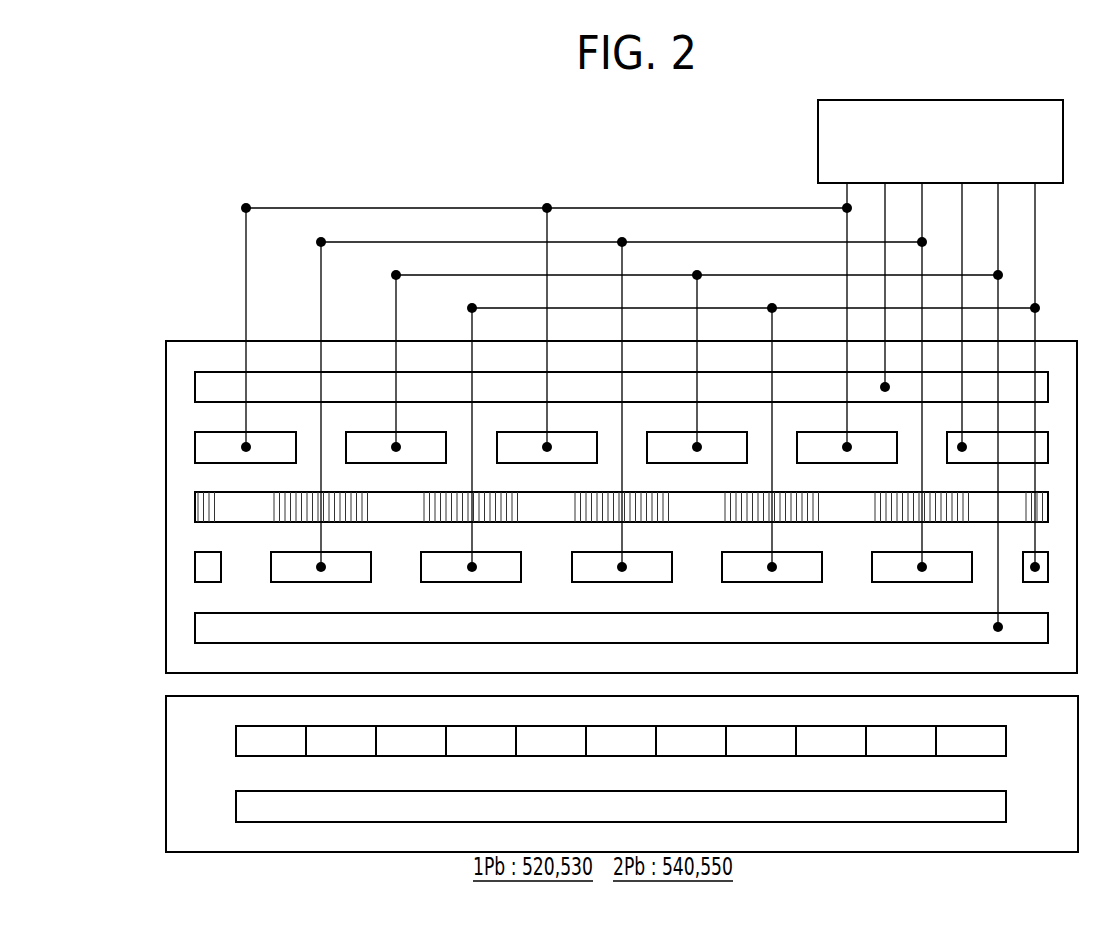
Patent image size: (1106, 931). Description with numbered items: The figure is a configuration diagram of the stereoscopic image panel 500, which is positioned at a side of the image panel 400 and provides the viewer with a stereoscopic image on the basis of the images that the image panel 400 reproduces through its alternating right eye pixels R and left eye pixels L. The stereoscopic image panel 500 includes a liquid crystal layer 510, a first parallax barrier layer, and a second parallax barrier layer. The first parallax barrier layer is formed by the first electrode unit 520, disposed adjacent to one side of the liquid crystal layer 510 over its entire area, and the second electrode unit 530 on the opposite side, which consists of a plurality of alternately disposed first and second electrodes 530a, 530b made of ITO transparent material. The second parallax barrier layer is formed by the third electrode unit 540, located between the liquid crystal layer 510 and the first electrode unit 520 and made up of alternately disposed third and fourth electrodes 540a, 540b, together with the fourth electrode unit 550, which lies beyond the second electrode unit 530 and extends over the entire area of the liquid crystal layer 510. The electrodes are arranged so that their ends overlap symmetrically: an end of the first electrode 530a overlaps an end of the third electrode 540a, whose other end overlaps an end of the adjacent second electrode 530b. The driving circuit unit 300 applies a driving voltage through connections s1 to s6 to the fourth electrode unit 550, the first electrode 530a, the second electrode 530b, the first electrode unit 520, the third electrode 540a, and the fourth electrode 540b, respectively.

The driving circuit unit 300 is at (818, 131).
The image panel 400 is at (166, 728).
The stereoscopic image panel 500 is at (166, 442).
The liquid crystal layer 510 is at (195, 505).
The first electrode unit 520 is at (195, 626).
The second electrode unit 530 is at (565, 412).
The first electrode 530a is at (546, 447).
The second electrode 530b is at (697, 447).
The third electrode unit 540 is at (570, 579).
The third electrode 540a is at (621, 567).
The fourth electrode 540b is at (621, 567).
The fourth electrode unit 550 is at (210, 372).